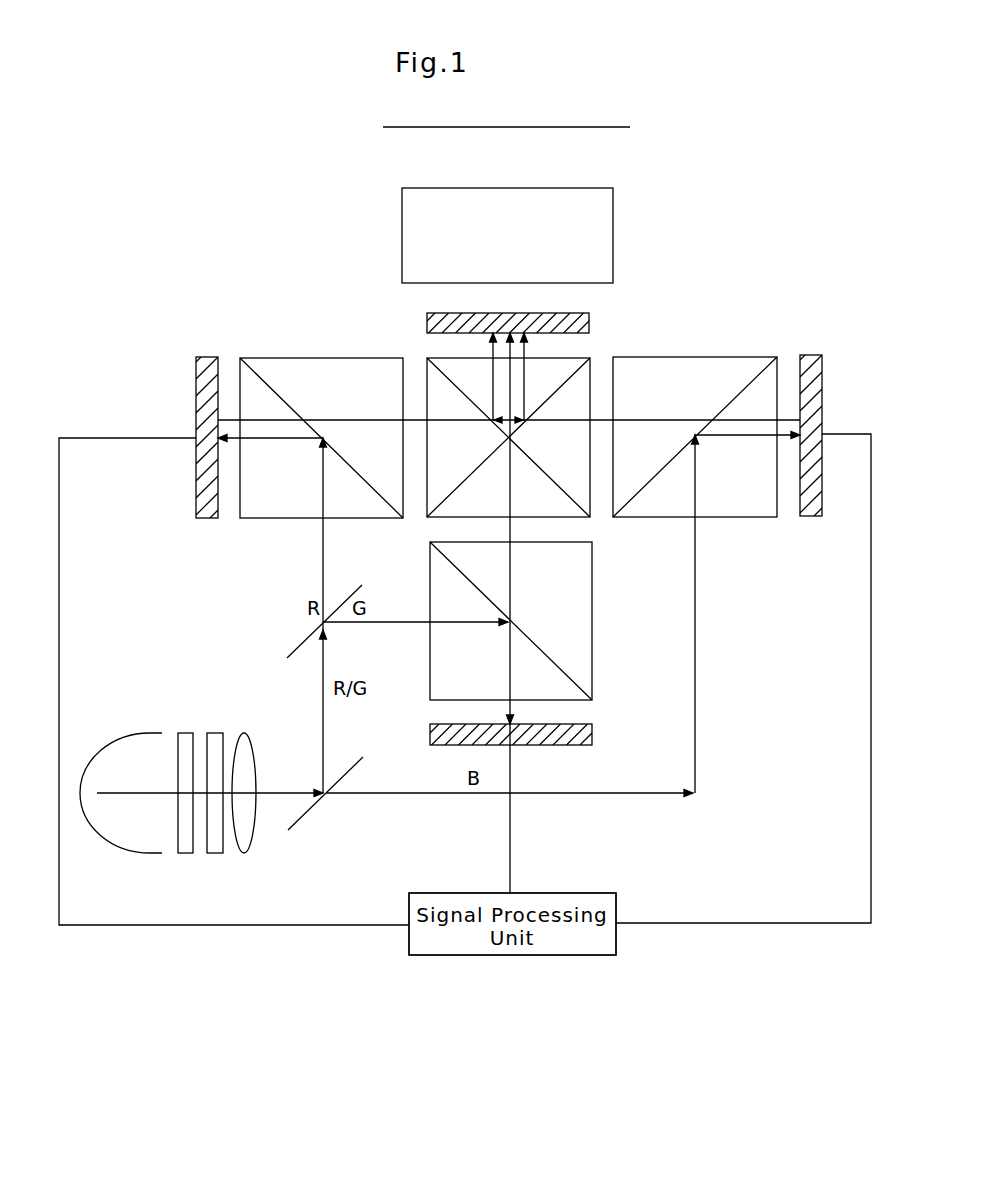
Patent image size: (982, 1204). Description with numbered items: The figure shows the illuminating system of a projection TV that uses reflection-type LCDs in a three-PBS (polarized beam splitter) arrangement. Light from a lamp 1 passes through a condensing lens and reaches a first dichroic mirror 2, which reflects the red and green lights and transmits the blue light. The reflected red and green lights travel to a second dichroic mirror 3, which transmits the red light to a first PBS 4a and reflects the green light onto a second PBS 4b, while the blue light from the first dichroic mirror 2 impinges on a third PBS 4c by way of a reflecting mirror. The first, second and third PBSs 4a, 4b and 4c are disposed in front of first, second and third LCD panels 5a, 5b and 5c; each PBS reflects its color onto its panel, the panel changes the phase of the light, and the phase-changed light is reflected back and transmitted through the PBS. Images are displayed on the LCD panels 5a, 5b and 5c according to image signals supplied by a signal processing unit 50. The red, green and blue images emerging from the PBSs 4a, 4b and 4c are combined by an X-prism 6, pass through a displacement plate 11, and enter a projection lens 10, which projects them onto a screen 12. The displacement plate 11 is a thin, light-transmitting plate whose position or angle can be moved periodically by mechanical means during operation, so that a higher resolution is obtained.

The lamp 1 is at (140, 735).
The first dichroic mirror 2 is at (308, 813).
The second dichroic mirror 3 is at (305, 638).
The first PBS 4a is at (322, 363).
The second PBS 4b is at (585, 617).
The third PBS 4c is at (737, 507).
The first LCD panel 5a is at (205, 357).
The second LCD panel 5b is at (592, 732).
The third LCD panel 5c is at (808, 516).
The X-prism 6 is at (462, 367).
The projection lens 10 is at (613, 235).
The displacement plate 11 is at (589, 322).
The screen 12 is at (573, 127).
The signal processing unit 50 is at (513, 955).